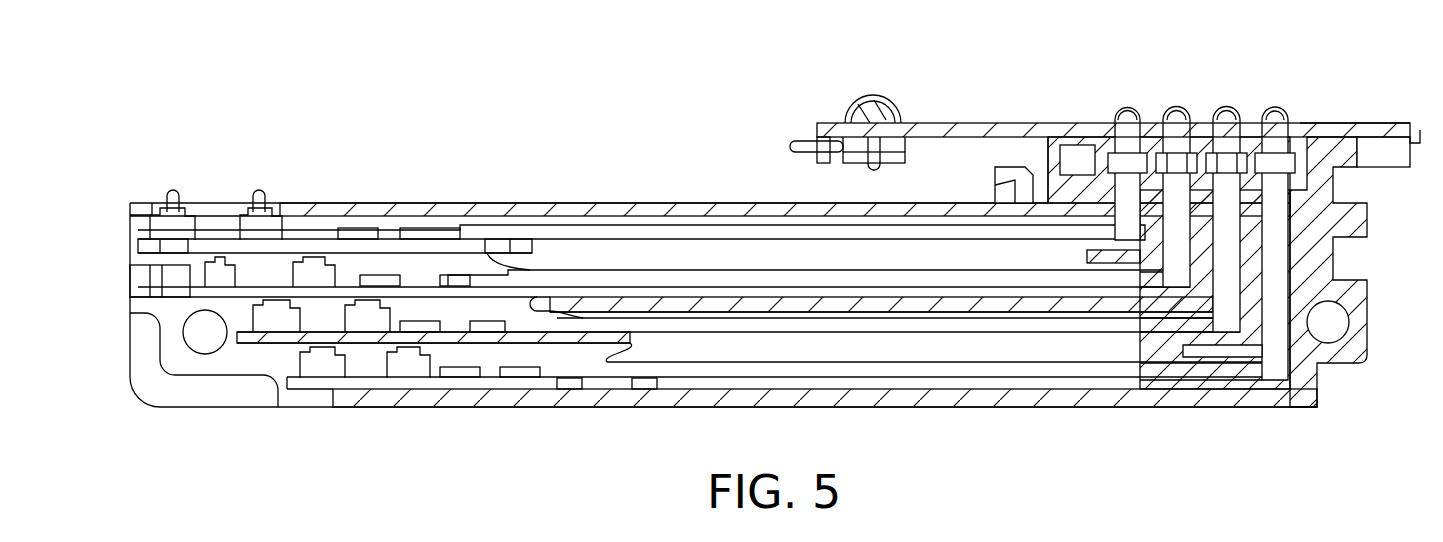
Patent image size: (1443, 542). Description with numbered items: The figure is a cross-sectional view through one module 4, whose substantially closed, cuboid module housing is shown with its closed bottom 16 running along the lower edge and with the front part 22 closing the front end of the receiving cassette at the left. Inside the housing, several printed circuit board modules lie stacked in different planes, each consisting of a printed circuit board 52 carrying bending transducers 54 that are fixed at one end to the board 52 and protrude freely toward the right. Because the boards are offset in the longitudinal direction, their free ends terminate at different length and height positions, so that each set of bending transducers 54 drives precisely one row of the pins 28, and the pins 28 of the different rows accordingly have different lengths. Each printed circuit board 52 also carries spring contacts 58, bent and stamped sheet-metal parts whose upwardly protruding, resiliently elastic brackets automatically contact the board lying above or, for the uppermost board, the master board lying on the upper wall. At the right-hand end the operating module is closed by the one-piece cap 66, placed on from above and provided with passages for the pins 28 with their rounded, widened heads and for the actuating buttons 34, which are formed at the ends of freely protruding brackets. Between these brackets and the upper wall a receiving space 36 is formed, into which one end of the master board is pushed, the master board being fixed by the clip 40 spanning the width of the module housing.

The module 4 is at (1340, 50).
The bottom 16 is at (978, 395).
The front part 22 is at (172, 362).
The pins 28 is at (1228, 237).
The actuating button 34 is at (876, 98).
The receiving space 36 is at (944, 170).
The clip 40 is at (1012, 185).
The printed circuit board 52 is at (415, 380).
The bending transducers 54 is at (1100, 327).
The spring contacts 58 is at (173, 190).
The cap 66 is at (1389, 123).